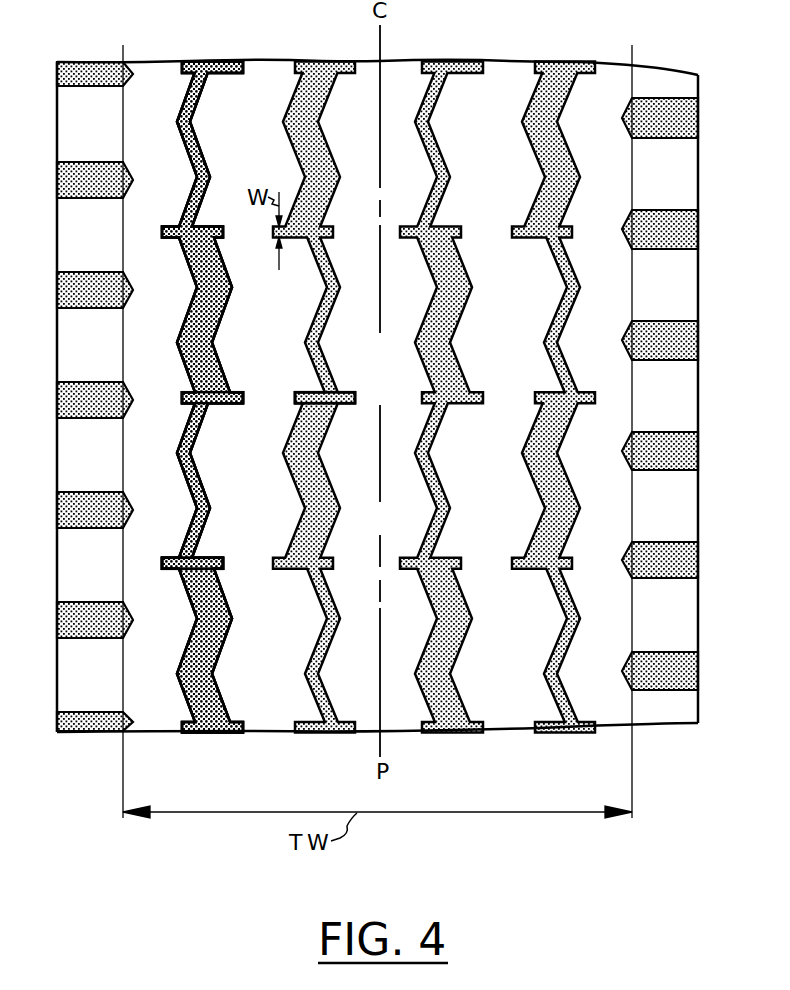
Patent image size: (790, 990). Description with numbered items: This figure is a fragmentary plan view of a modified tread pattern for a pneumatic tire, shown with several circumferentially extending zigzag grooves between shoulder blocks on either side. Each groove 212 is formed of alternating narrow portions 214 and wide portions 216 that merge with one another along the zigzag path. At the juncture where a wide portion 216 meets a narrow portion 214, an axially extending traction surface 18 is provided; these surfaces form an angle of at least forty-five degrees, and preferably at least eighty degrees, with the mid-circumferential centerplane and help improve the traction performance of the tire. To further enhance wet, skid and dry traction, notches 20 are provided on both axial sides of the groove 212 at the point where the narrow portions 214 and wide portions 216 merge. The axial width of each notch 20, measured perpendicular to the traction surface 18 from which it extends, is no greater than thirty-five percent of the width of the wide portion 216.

The traction surface 18 is at (190, 557).
The notched portion 20 is at (223, 558).
The groove 212 is at (188, 593).
The narrow portion 214 is at (186, 470).
The wide portion 216 is at (224, 592).